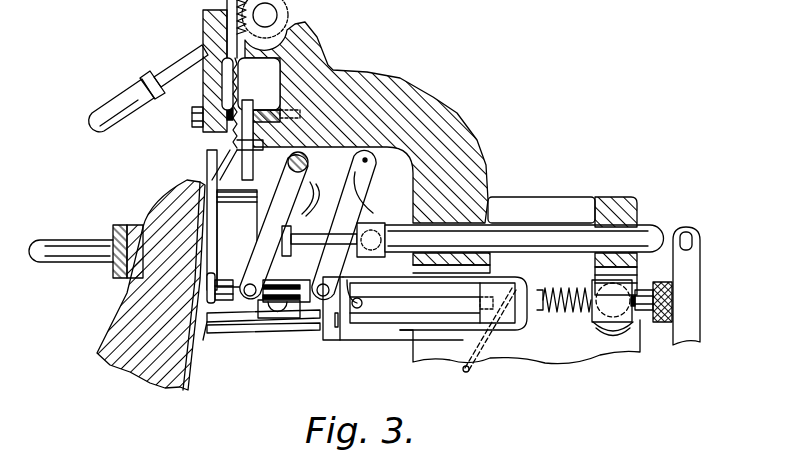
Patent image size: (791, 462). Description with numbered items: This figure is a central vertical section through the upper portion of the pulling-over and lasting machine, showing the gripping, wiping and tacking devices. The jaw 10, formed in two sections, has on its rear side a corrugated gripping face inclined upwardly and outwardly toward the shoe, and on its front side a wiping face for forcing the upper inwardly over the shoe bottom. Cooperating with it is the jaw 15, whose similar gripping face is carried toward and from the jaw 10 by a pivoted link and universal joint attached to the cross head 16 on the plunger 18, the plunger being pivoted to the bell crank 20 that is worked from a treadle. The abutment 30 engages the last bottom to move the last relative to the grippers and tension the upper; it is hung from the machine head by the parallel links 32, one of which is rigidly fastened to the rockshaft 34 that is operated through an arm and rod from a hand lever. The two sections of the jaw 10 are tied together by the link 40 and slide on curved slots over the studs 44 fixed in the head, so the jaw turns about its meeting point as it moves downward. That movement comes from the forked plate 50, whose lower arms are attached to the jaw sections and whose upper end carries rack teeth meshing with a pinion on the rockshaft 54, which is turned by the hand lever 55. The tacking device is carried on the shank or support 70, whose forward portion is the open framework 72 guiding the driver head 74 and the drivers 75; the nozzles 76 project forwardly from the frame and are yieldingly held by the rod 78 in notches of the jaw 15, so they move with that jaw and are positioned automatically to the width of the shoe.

The jaw 10 is at (208, 149).
The jaw 15 is at (310, 153).
The cross head 16 is at (392, 224).
The plunger 18 is at (640, 237).
The bell crank 20 is at (700, 318).
The abutment 30 is at (205, 290).
The parallel links 32 is at (290, 187).
The rockshaft 34 is at (398, 102).
The link 40 is at (220, 110).
The studs 44 is at (282, 102).
The forked plate 50 is at (233, 18).
The rockshaft 54 is at (270, 15).
The hand lever 55 is at (120, 98).
The shank or support 70 is at (636, 290).
The open framework 72 is at (500, 273).
The driver head 74 is at (520, 287).
The drivers 75 is at (404, 317).
The nozzles 76 is at (262, 332).
The rod 78 is at (278, 315).